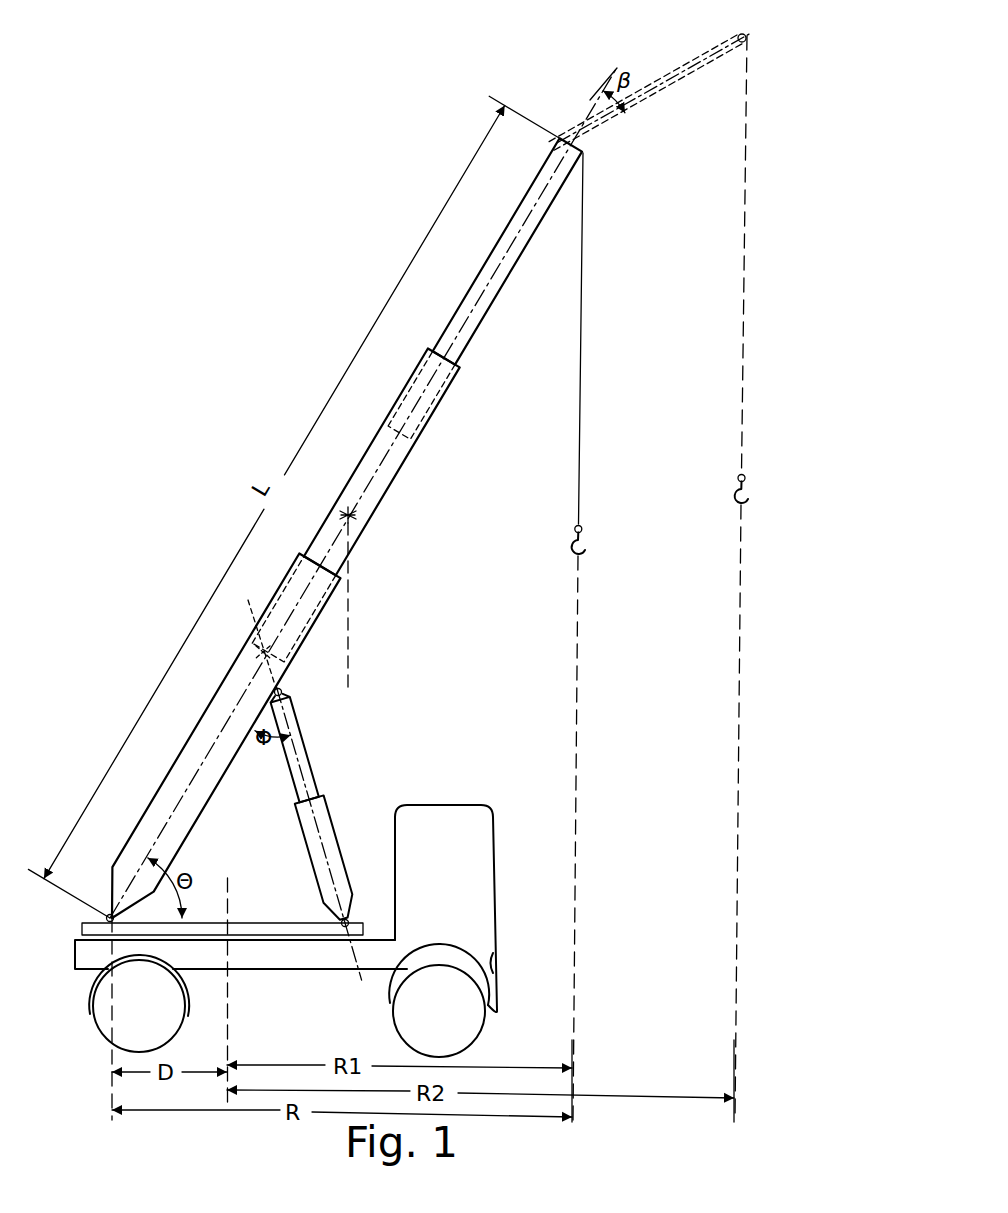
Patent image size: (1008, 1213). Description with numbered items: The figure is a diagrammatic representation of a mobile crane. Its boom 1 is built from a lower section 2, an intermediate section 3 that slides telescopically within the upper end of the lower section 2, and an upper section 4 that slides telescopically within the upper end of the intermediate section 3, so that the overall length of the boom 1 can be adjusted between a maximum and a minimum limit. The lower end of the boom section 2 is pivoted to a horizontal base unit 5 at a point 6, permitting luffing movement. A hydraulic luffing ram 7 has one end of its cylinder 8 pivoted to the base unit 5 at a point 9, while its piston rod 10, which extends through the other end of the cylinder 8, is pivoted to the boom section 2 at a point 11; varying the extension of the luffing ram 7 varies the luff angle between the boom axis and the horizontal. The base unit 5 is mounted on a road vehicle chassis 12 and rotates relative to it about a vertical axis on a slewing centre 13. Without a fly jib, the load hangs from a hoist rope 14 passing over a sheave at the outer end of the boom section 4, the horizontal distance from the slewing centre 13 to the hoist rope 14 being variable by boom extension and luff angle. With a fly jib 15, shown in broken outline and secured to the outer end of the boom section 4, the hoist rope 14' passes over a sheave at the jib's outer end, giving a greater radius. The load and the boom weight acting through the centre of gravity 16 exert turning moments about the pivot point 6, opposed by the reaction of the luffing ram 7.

The boom 1 is at (363, 493).
The lower section 2 is at (189, 738).
The intermediate section 3 is at (378, 434).
The upper section 4 is at (480, 272).
The base unit 5 is at (268, 922).
The boom pivot point 6 is at (104, 918).
The luffing ram 7 is at (364, 797).
The cylinder 8 is at (335, 856).
The cylinder pivot point 9 is at (350, 920).
The piston rod 10 is at (306, 753).
The piston rod pivot point 11 is at (283, 690).
The road vehicle chassis 12 is at (460, 890).
The slewing centre 13 is at (229, 905).
The hoist rope 14 is at (593, 636).
The hoist rope 14' is at (718, 578).
The fly jib 15 is at (632, 107).
The centre of gravity 16 is at (350, 633).